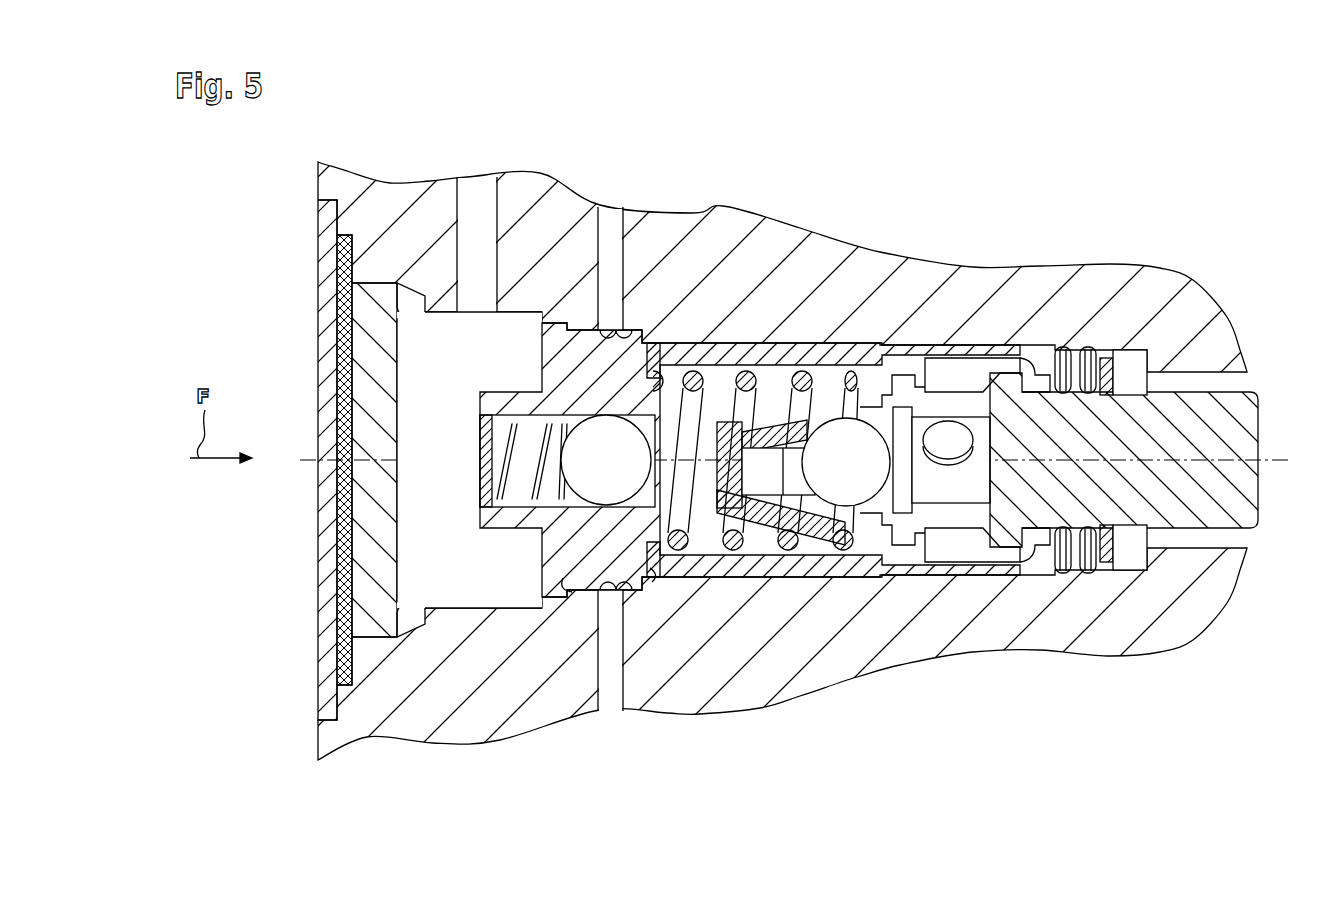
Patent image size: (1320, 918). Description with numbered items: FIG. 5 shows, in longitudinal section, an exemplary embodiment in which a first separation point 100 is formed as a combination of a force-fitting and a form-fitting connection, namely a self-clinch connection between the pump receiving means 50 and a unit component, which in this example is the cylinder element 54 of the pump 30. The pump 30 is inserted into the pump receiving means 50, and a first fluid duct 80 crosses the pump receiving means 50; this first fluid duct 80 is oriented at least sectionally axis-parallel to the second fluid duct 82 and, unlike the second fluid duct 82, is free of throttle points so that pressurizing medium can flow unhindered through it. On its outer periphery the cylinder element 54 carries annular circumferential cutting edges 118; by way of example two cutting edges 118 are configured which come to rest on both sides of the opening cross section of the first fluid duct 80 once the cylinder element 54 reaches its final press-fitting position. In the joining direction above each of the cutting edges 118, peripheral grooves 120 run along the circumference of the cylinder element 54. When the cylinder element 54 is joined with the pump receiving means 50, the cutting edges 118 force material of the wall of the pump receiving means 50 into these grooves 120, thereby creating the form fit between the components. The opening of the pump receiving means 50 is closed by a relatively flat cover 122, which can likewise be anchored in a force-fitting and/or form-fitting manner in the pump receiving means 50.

The pump 30 is at (1092, 332).
The pump receiving means 50 is at (478, 605).
The cylinder element 54 is at (807, 350).
The first fluid duct 80 is at (612, 233).
The second fluid duct 82 is at (478, 213).
The first separation point 100 is at (589, 608).
The cutting edges 118 is at (648, 335).
The peripheral grooves 120 is at (568, 586).
The cover 122 is at (372, 525).